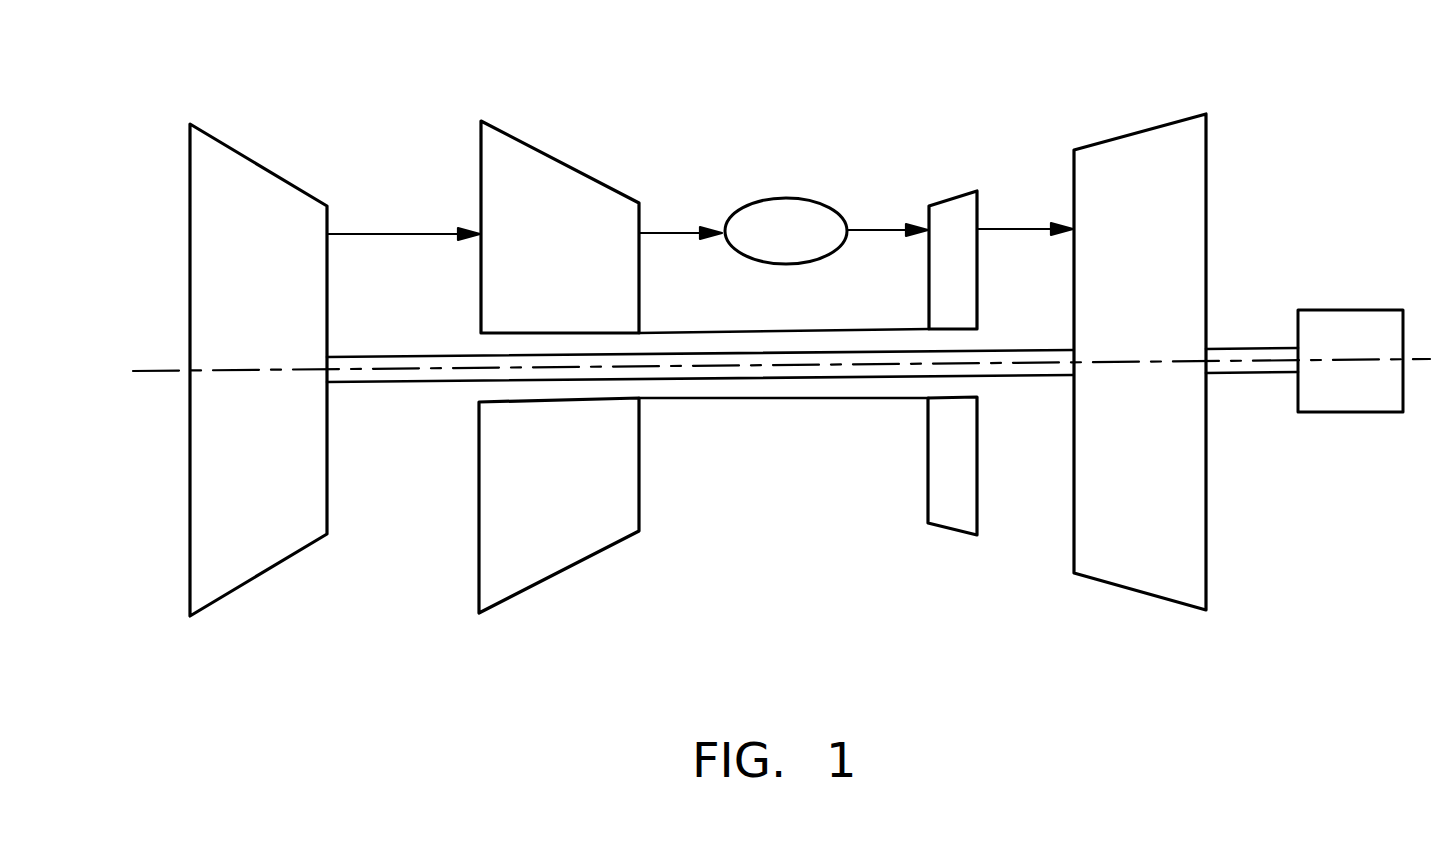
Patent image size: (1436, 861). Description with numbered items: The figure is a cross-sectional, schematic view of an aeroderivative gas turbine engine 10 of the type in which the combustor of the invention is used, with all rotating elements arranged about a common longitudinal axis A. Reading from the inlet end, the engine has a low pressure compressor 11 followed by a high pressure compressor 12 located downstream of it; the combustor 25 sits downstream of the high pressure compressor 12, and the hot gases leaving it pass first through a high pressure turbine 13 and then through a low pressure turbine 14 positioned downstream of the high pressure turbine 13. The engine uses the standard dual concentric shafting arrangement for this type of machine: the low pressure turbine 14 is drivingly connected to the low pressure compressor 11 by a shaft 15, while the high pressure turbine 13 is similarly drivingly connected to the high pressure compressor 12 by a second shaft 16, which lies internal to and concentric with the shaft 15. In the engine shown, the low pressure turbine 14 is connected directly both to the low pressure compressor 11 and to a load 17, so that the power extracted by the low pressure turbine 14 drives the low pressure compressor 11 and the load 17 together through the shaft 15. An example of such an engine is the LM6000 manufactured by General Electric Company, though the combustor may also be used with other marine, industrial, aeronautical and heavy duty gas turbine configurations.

The aeroderivative gas turbine engine 10 is at (378, 148).
The longitudinal axis A is at (168, 367).
The low pressure compressor 11 is at (198, 562).
The high pressure compressor 12 is at (570, 555).
The combustor 25 is at (775, 217).
The high pressure turbine 13 is at (930, 492).
The low pressure turbine 14 is at (1188, 528).
The shaft 15 is at (995, 375).
The second shaft 16 is at (715, 402).
The load 17 is at (1317, 318).